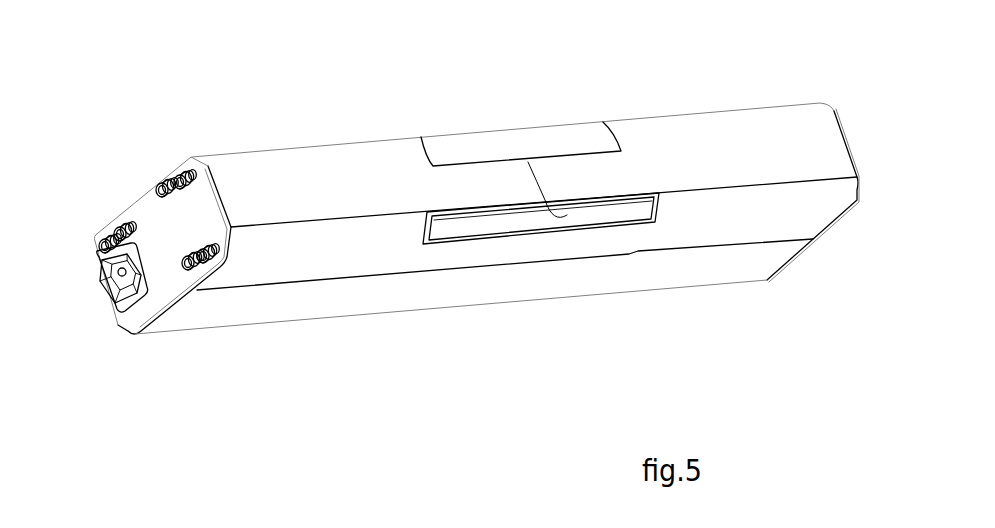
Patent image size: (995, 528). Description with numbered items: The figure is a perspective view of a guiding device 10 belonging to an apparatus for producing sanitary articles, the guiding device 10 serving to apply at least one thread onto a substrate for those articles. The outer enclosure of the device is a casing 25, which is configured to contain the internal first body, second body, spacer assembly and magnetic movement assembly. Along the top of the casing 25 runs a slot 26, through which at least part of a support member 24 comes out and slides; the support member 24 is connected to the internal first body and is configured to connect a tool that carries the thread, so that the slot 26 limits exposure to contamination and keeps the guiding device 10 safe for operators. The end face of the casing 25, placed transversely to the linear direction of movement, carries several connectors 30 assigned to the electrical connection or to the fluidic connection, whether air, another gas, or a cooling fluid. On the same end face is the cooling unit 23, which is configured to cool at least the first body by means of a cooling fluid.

The guiding device 10 is at (136, 92).
The cooling unit 23 is at (117, 278).
The support member 24 is at (557, 218).
The casing 25 is at (707, 137).
The slot 26 is at (470, 214).
The connectors 30 is at (175, 176).